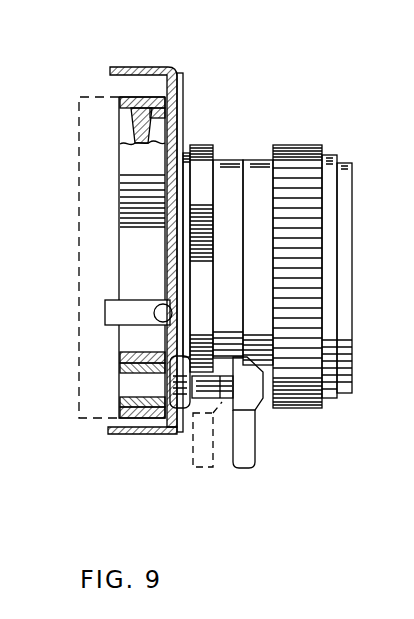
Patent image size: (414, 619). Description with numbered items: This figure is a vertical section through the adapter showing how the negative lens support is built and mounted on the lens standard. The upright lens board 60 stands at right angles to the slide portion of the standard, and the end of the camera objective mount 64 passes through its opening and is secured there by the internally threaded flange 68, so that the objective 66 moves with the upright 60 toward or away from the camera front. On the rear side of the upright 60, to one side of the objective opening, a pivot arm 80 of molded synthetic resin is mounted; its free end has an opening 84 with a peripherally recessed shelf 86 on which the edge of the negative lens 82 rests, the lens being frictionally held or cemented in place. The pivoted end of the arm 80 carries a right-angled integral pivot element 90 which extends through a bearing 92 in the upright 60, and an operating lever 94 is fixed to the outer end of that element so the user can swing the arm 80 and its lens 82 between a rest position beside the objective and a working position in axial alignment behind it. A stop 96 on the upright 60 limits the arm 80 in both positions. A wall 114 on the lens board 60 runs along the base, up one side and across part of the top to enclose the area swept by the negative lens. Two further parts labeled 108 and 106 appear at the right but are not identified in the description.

The wall 114 is at (147, 67).
The upright lens board 60 is at (177, 103).
The negative lens 82 is at (133, 130).
The recessed shelf 86 is at (150, 88).
The opening 84 is at (126, 142).
The internally threaded flange 68 is at (165, 240).
The pivot arm 80 is at (127, 277).
The stop 96 is at (107, 315).
The camera objective mount 64 is at (231, 159).
The objective 66 is at (348, 298).
The bearing 92 is at (182, 410).
The pivot element 90 is at (222, 408).
The operating lever 94 is at (246, 468).
The element 108 is at (399, 185).
The element 106 is at (401, 220).